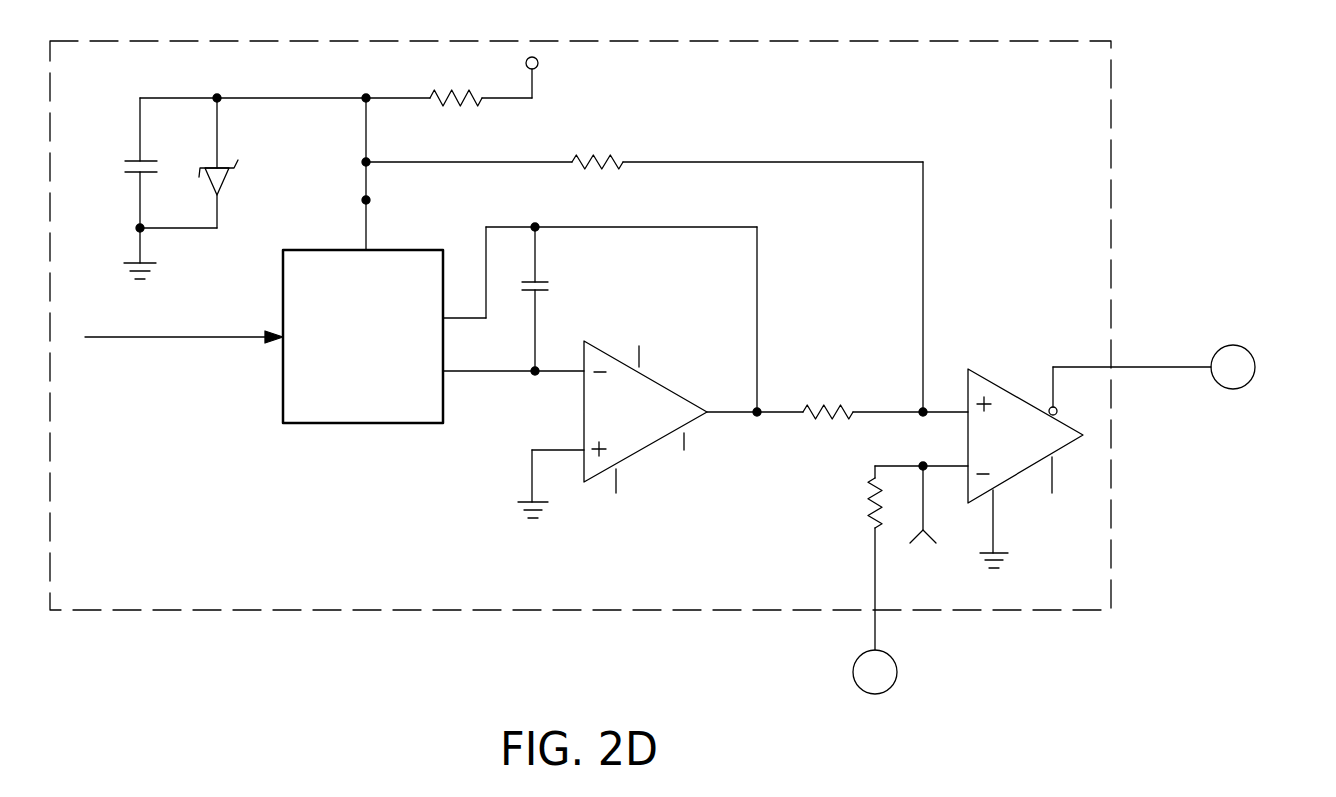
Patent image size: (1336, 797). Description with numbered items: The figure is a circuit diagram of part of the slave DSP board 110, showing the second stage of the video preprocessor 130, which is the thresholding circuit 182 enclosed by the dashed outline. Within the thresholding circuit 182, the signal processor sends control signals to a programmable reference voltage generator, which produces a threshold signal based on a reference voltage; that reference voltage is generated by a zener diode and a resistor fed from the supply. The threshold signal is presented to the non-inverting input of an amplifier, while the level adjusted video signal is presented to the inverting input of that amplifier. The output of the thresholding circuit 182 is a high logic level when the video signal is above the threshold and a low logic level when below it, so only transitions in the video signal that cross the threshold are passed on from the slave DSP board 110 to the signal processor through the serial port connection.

The slave DSP board 110 is at (1192, 101).
The video preprocessor 130 is at (713, 41).
The thresholding circuit 182 is at (520, 585).